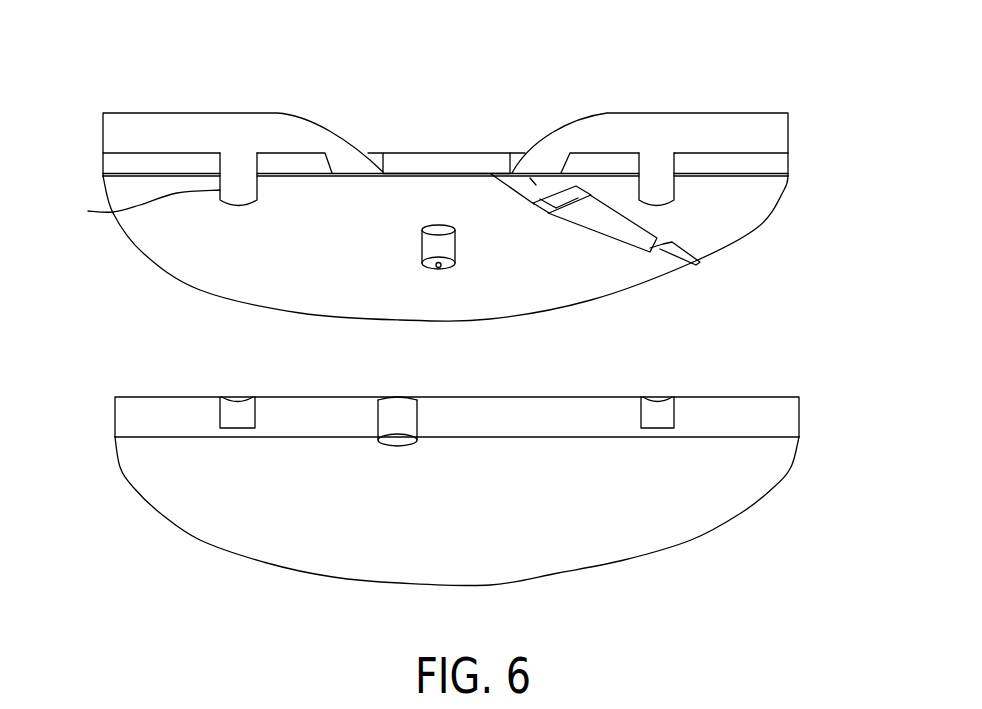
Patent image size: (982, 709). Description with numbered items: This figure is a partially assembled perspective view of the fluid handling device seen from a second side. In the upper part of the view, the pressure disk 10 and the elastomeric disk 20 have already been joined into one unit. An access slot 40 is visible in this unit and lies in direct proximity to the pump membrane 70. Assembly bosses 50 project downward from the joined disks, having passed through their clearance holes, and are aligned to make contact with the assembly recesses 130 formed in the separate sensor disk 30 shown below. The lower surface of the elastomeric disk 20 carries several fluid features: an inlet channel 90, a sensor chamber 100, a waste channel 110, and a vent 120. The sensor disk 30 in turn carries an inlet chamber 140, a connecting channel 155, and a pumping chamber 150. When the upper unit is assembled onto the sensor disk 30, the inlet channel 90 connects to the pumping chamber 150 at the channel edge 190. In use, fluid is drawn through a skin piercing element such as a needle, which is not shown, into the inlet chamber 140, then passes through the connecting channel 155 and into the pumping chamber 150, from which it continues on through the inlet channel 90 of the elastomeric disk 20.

The pressure disk 10 is at (143, 137).
The elastomeric disk 20 is at (120, 167).
The sensor disk 30 is at (135, 420).
The access slot 40 is at (405, 165).
The assembly boss 50 is at (365, 191).
The pump membrane 70 is at (433, 172).
The inlet channel 90 is at (541, 152).
The sensor chamber 100 is at (581, 192).
The waste channel 110 is at (637, 232).
The vent 120 is at (698, 255).
The assembly recess 130 is at (236, 420).
The inlet chamber 140 is at (397, 412).
The pumping chamber 150 is at (494, 398).
The connecting channel 155 is at (398, 402).
The channel edge 190 is at (500, 172).